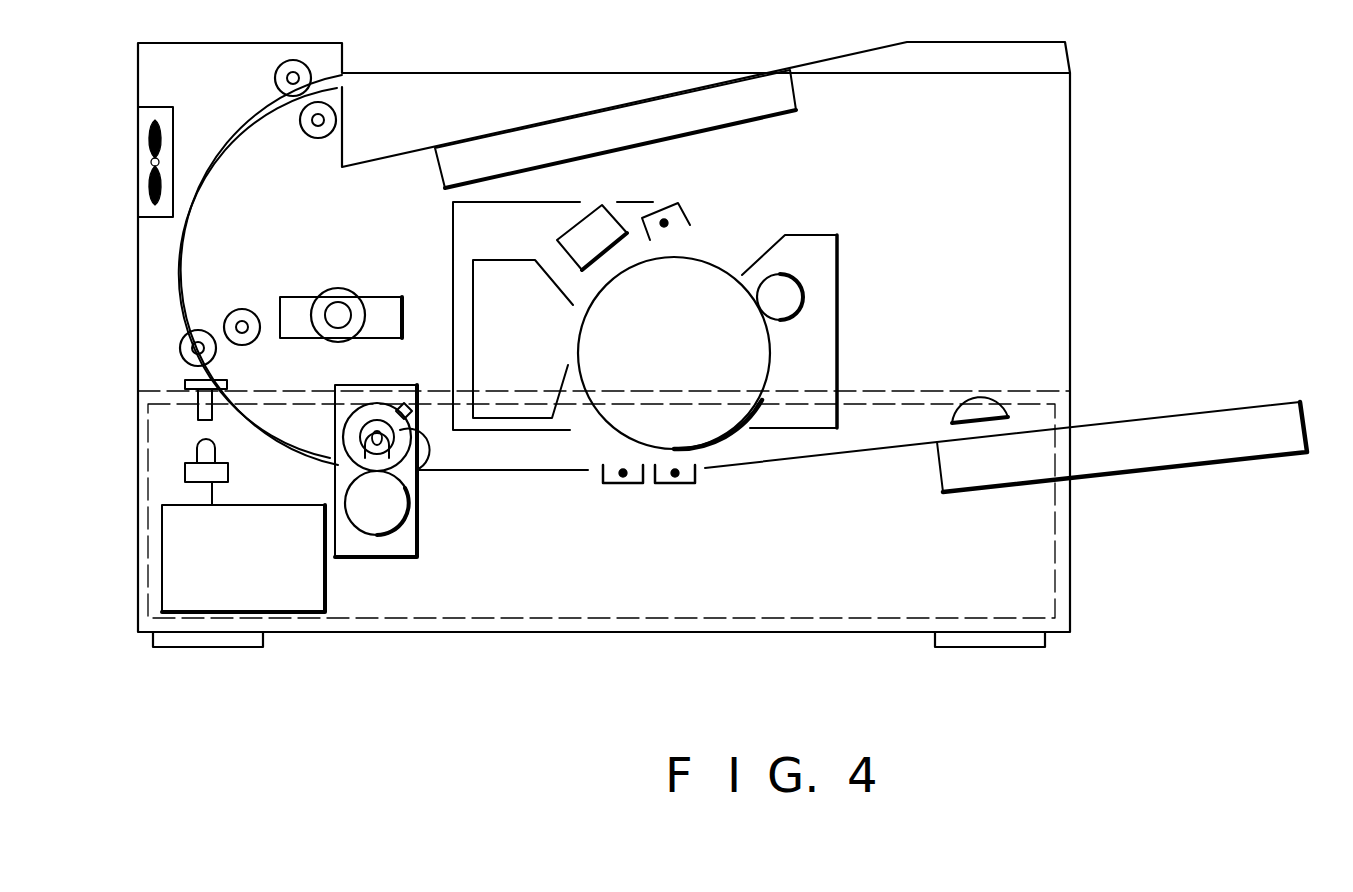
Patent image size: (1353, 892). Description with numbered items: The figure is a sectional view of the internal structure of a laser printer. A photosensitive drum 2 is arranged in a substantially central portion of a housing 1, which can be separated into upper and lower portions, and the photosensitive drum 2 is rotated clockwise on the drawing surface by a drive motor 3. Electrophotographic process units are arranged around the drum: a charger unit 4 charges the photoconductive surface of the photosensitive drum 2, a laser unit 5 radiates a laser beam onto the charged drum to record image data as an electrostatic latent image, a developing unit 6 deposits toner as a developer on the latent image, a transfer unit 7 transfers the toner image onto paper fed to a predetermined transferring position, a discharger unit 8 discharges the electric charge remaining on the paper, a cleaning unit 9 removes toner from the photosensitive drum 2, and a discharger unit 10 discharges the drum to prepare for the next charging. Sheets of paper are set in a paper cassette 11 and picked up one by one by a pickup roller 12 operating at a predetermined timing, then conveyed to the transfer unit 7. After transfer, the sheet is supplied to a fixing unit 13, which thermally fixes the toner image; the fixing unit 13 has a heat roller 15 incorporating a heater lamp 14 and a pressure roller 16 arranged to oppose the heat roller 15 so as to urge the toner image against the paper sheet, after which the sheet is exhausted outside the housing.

The housing 1 is at (1070, 198).
The photosensitive drum 2 is at (758, 360).
The drive motor 3 is at (318, 308).
The charger unit 4 is at (688, 218).
The laser unit 5 is at (796, 94).
The developing unit 6 is at (838, 272).
The transfer unit 7 is at (686, 485).
The discharger unit 8 is at (627, 485).
The cleaning unit 9 is at (472, 276).
The discharger unit 10 is at (573, 236).
The paper cassette 11 is at (1265, 462).
The pickup roller 12 is at (978, 397).
The fixing unit 13 is at (398, 558).
The heater lamp 14 is at (398, 447).
The heat roller 15 is at (398, 457).
The pressure roller 16 is at (398, 512).